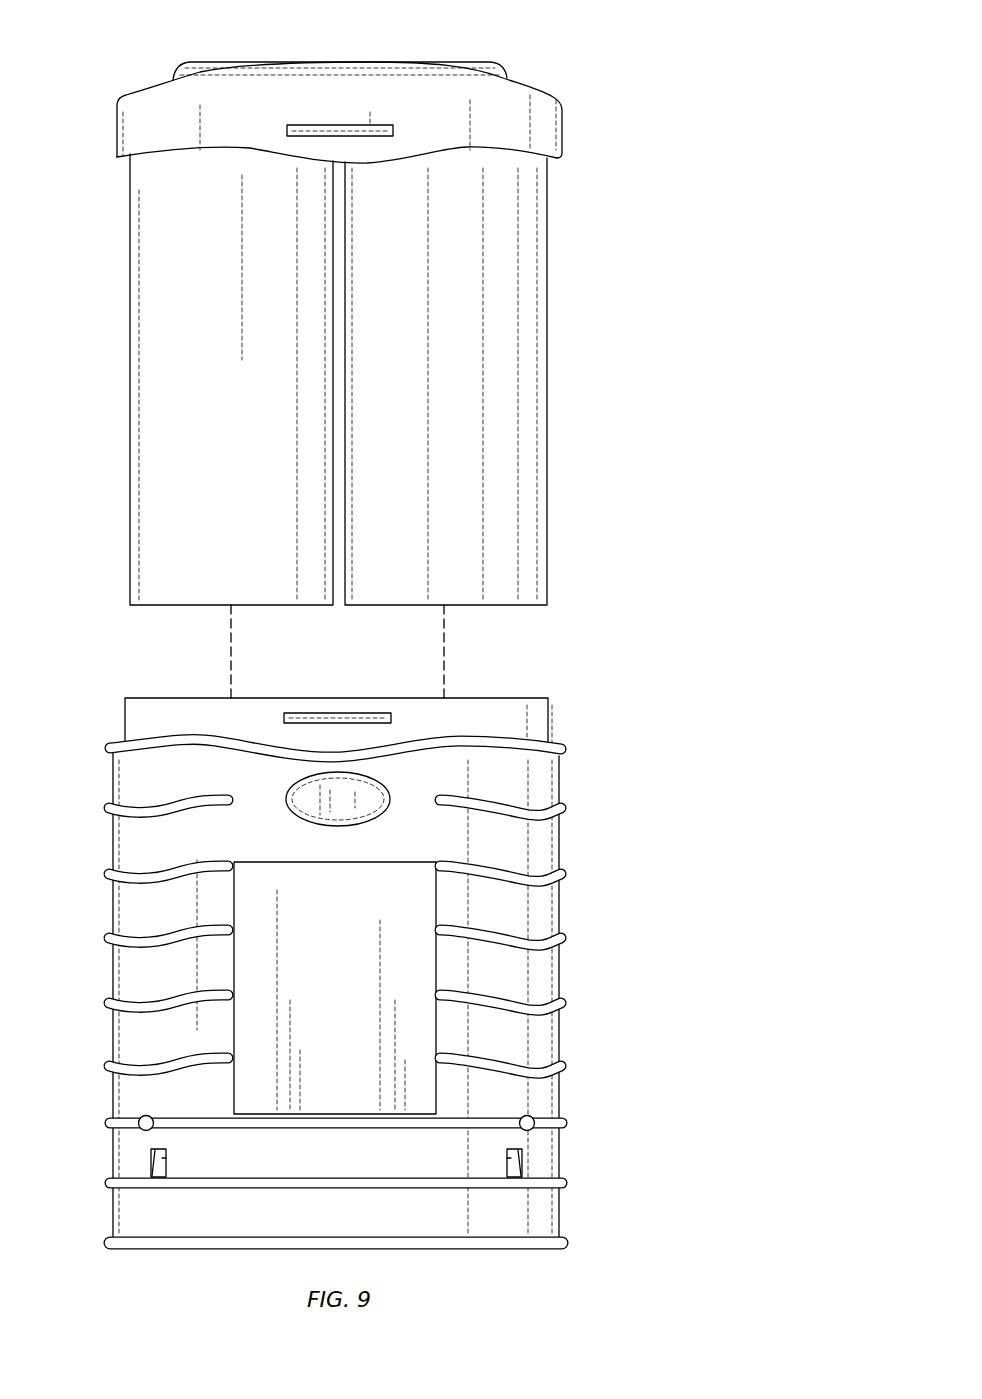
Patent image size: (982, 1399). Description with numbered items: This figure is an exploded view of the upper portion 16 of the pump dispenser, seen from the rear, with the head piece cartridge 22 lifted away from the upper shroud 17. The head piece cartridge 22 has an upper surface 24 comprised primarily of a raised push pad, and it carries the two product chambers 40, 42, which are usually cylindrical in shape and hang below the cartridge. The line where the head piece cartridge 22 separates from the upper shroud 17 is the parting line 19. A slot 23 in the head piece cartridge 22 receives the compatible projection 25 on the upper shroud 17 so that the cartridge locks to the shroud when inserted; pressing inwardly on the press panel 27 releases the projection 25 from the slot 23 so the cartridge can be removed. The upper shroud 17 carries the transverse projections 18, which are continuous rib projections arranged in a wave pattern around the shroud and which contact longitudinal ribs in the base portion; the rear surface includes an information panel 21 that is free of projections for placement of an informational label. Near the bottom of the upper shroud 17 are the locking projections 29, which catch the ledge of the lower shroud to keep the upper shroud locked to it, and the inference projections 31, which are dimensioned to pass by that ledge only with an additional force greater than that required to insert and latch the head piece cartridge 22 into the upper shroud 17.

The upper portion 16 is at (563, 840).
The upper shroud 17 is at (505, 910).
The transverse projections 18 is at (565, 747).
The parting line 19 is at (553, 160).
The information panel 21 is at (250, 870).
The head piece cartridge 22 is at (555, 97).
The slot 23 is at (358, 125).
The upper surface 24 is at (474, 62).
The projection 25 is at (355, 713).
The press panel 27 is at (300, 797).
The locking projections 29 is at (143, 1150).
The inference projections 31 is at (140, 1116).
The product chamber 40 is at (175, 425).
The product chamber 42 is at (468, 449).